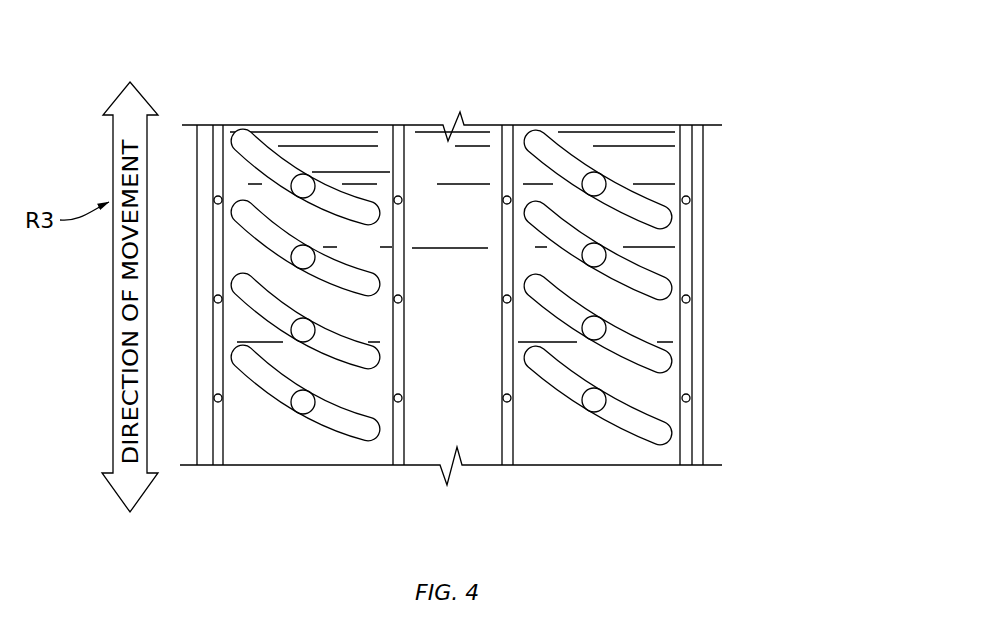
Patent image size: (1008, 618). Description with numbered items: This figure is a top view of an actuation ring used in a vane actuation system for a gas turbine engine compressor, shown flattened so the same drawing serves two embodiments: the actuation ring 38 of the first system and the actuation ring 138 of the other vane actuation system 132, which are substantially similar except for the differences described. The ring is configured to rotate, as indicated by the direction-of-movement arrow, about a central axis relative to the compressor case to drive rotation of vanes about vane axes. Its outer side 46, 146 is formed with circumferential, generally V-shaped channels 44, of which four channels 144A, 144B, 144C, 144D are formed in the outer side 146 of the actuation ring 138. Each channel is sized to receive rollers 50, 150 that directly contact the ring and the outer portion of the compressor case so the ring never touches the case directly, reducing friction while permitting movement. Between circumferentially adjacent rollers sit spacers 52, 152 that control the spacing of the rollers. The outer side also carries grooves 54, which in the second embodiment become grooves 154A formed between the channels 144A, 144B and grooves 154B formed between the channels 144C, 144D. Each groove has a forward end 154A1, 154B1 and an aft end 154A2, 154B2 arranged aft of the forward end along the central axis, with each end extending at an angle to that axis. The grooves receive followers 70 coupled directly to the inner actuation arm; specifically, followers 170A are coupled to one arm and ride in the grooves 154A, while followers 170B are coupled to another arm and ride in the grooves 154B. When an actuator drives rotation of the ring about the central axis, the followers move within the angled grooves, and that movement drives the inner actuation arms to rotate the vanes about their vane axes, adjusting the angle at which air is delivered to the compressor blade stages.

The vane actuation system 132 is at (705, 42).
The actuation ring 138 is at (633, 76).
The actuation ring 38 is at (290, 472).
The channels 44 is at (218, 466).
The channel 144A is at (210, 237).
The channel 144B is at (407, 317).
The channel 144C is at (499, 267).
The channel 144D is at (695, 153).
The spacers 152 is at (694, 237).
The rollers 150 is at (693, 300).
The rollers 50 is at (212, 300).
The outer side 46 is at (311, 237).
The outer side 146 is at (311, 237).
The grooves 54 is at (352, 284).
The grooves 154A is at (372, 264).
The forward end 154A1 is at (231, 139).
The aft end 154A2 is at (362, 219).
The spacers 52 is at (236, 214).
The followers 170A is at (297, 192).
The followers 70 is at (300, 401).
The grooves 154B is at (623, 251).
The forward end 154B1 is at (538, 144).
The aft end 154B2 is at (642, 205).
The followers 170B is at (601, 268).